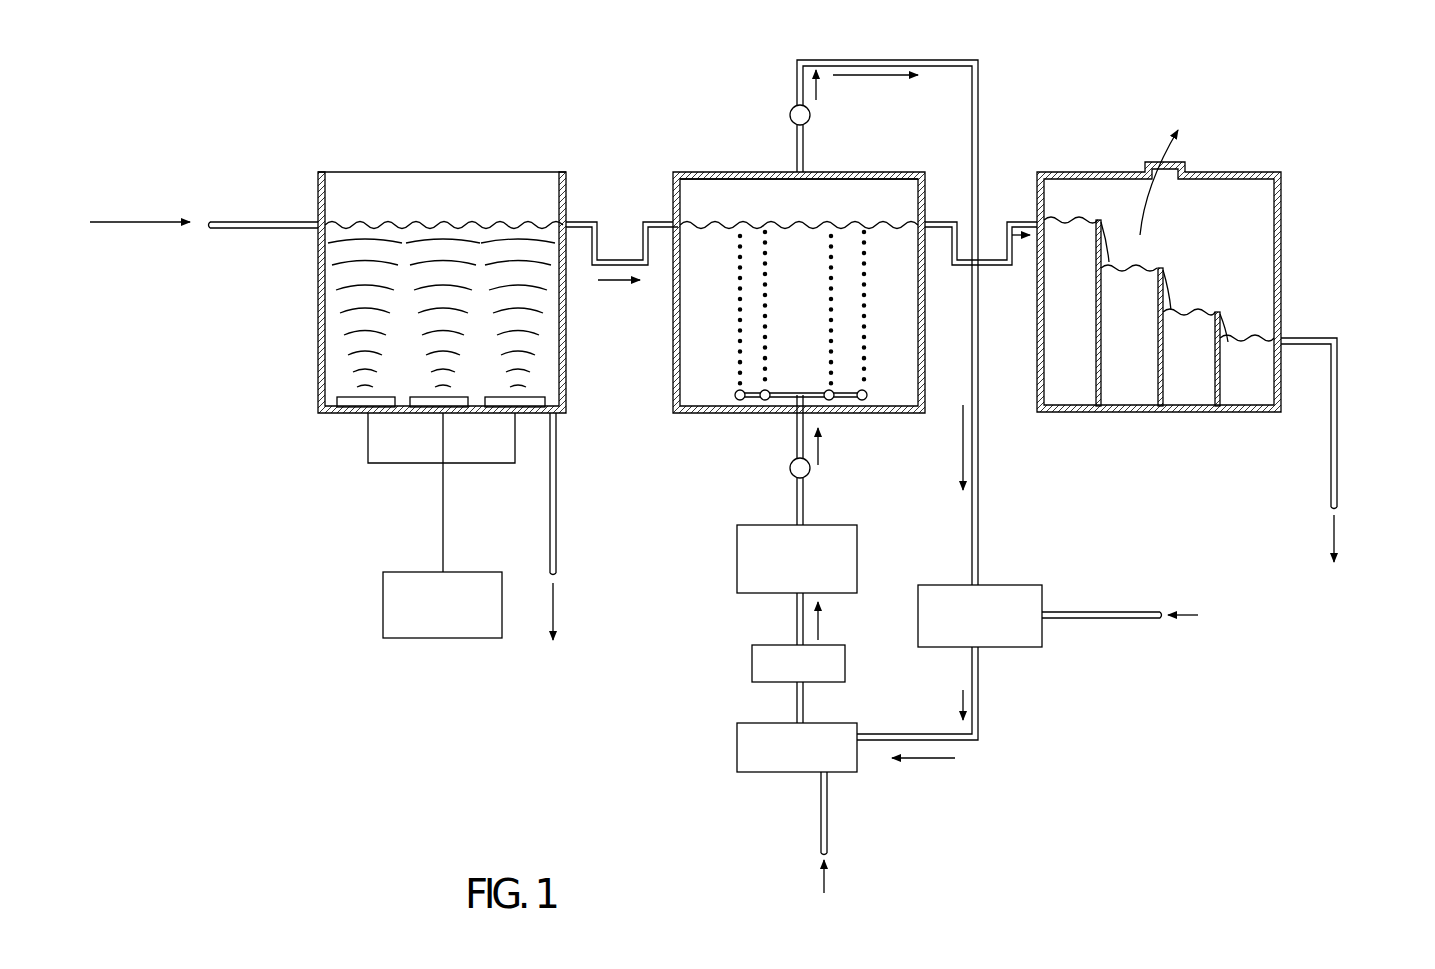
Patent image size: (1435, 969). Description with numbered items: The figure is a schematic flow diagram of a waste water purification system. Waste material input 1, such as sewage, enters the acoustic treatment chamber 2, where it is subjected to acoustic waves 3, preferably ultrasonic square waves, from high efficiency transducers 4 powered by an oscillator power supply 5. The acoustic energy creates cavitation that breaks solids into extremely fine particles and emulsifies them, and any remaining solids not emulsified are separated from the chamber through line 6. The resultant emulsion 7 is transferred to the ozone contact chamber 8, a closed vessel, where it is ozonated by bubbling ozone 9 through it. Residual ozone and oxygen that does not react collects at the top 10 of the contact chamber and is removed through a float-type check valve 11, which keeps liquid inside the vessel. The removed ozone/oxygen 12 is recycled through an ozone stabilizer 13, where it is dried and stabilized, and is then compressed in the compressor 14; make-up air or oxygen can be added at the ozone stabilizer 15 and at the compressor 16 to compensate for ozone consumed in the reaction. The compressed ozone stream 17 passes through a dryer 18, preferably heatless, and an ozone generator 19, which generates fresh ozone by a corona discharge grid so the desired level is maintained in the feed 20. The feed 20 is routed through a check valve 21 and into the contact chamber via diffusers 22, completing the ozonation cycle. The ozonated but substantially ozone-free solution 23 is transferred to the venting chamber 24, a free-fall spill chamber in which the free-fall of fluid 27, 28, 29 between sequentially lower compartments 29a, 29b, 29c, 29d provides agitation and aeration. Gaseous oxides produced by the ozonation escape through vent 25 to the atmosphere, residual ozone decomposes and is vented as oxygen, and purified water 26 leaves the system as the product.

The waste material input 1 is at (201, 239).
The acoustic treatment chamber 2 is at (318, 360).
The acoustic waves 3 is at (505, 240).
The transducers 4 is at (515, 411).
The oscillator power supply 5 is at (383, 612).
The line 6 is at (562, 570).
The emulsion 7 is at (622, 279).
The ozone contact chamber 8 is at (674, 366).
The ozone 9 is at (740, 260).
The top of the ozone contact chamber 10 is at (717, 183).
The check valve 11 is at (790, 110).
The removed ozone/oxygen 12 is at (887, 381).
The ozone stabilizer 13 is at (1042, 591).
The compressor 14 is at (737, 759).
The make-up air or oxygen at the ozone stabilizer 15 is at (1120, 642).
The make-up air or oxygen at the compressor 16 is at (850, 847).
The compressed ozone stream 17 is at (796, 700).
The dryer 18 is at (752, 660).
The ozone generator 19 is at (737, 556).
The feed 20 is at (805, 510).
The check valve 21 is at (812, 470).
The diffusers 22 is at (765, 405).
The ozonated solution 23 is at (995, 220).
The venting chamber 24 is at (1071, 412).
The vent 25 is at (1265, 158).
The purified water 26 is at (1334, 501).
The free-fall of fluid 27 is at (1104, 242).
The free-fall of fluid 28 is at (1172, 302).
The free-fall of fluid 29 is at (1226, 332).
The compartment 29a is at (1078, 370).
The compartment 29b is at (1136, 370).
The compartment 29c is at (1193, 377).
The compartment 29d is at (1253, 377).